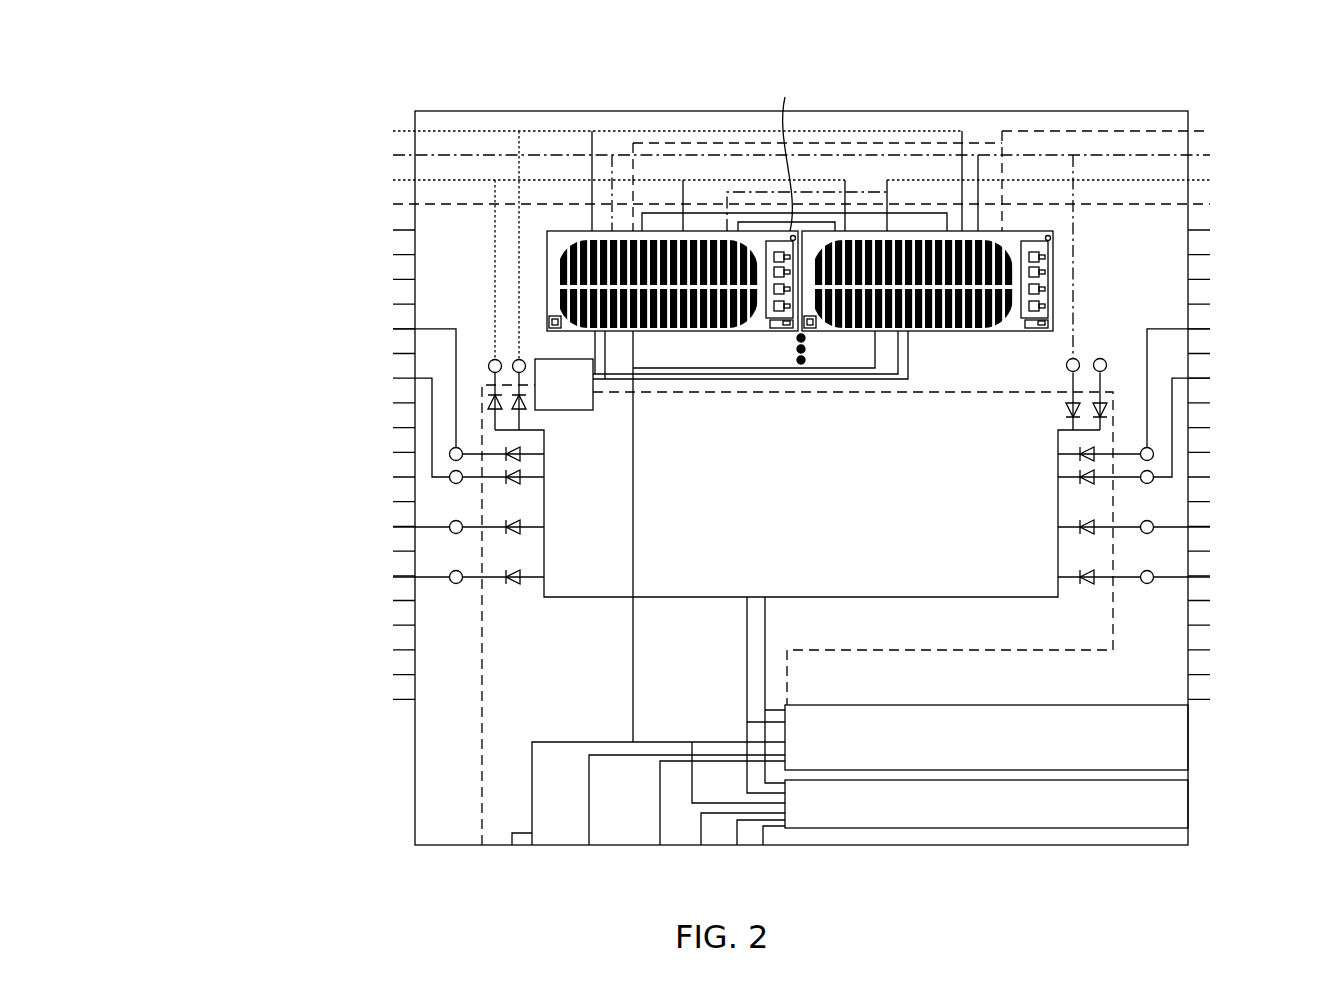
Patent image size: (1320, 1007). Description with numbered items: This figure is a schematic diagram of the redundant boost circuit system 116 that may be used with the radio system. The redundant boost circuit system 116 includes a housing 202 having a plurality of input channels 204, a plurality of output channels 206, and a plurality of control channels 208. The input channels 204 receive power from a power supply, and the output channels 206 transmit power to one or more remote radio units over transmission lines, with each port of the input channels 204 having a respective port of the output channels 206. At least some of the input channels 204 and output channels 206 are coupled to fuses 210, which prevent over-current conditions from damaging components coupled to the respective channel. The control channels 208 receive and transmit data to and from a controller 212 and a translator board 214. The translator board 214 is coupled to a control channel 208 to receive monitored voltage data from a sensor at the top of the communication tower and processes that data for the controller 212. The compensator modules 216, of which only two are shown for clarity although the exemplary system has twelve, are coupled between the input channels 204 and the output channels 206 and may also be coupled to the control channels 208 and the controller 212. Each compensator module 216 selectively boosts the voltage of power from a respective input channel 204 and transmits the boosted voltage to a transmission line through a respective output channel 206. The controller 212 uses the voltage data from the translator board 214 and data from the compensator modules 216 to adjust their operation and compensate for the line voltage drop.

The redundant boost circuit system 116 is at (224, 69).
The housing 202 is at (1055, 848).
The input channels 204 is at (342, 118).
The output channels 206 is at (1196, 98).
The control channels 208 is at (612, 886).
The fuses 210 is at (460, 445).
The controller 212 is at (1163, 738).
The translator board 214 is at (1163, 805).
The compensator modules 216 is at (568, 231).